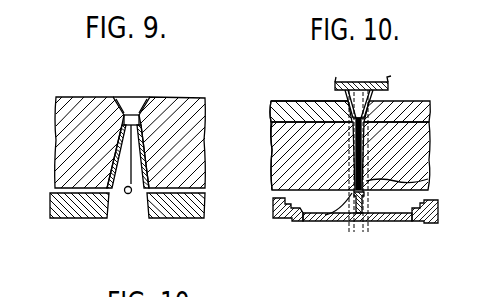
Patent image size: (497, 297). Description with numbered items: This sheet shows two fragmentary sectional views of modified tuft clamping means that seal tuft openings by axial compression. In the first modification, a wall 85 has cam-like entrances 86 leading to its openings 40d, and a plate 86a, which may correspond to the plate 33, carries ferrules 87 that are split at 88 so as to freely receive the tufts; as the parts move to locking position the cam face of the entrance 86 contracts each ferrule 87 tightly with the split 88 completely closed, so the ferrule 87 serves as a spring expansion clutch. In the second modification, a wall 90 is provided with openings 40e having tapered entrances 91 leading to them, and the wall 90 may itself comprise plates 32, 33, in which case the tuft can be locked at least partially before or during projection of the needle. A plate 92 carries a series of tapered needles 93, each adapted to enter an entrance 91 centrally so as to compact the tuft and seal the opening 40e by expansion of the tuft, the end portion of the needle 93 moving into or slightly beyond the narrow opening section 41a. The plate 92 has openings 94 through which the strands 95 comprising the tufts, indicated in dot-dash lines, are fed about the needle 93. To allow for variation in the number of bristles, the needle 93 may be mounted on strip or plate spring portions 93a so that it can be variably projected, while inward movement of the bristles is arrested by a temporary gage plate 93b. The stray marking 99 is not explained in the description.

In FIG. 9, the wall 85 is at (72, 126).
In FIG. 9, the cam-like entrance 86 is at (147, 133).
In FIG. 9, the plate 86a is at (186, 210).
In FIG. 9, the opening 40d is at (140, 101).
In FIG. 9, the ferrule 87 is at (104, 192).
In FIG. 9, the split 88 is at (127, 194).
In FIG. 10, the plate 32 is at (432, 118).
In FIG. 10, the plate 33 is at (430, 136).
In FIG. 10, the narrow opening section 41a is at (326, 103).
In FIG. 10, the opening 40e is at (373, 101).
In FIG. 10, the temporary gage plate 93b is at (375, 82).
In FIG. 10, the wall 90 is at (432, 149).
In FIG. 10, the tapered entrance 91 is at (428, 179).
In FIG. 10, the plate 92 is at (282, 221).
In FIG. 10, the needle 93 is at (336, 212).
In FIG. 10, the strip or plate spring portion 93a is at (345, 198).
In FIG. 10, the opening 94 is at (358, 222).
In FIG. 10, the strand 95 is at (368, 226).
In FIG. 10, the label 99 is at (487, 232).